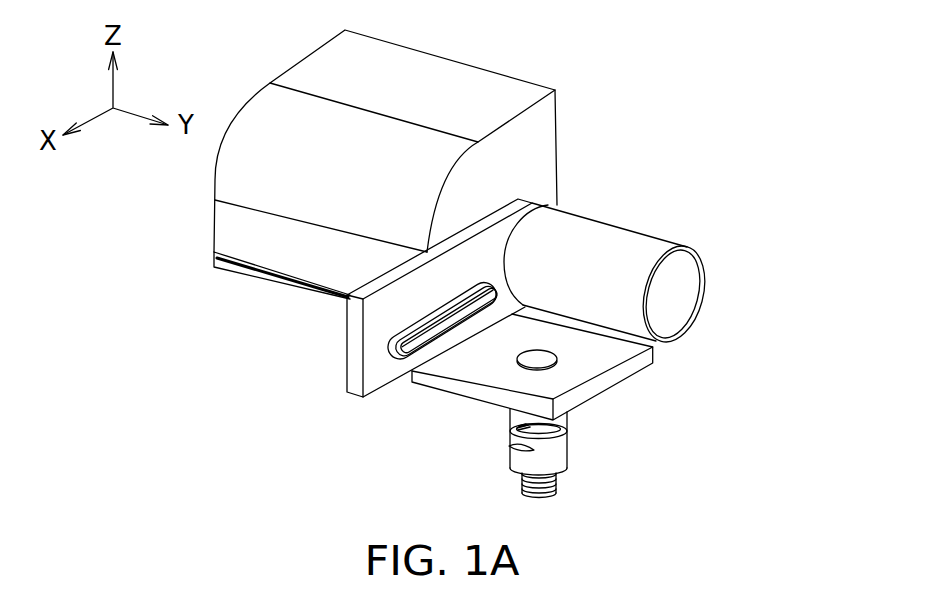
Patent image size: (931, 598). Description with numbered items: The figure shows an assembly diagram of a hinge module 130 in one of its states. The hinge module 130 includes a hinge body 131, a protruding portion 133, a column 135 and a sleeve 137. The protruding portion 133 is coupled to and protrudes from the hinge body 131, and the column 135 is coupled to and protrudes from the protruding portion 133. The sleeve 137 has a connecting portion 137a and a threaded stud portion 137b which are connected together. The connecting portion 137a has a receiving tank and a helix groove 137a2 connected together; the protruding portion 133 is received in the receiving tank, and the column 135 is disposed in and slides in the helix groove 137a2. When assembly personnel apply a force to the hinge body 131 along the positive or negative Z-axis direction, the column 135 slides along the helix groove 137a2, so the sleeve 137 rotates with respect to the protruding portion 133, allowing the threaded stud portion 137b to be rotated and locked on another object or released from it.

The hinge module 130 is at (857, 44).
The hinge body 131 is at (630, 218).
The protruding portion 133 is at (568, 434).
The column 135 is at (521, 427).
The sleeve 137 is at (678, 449).
The connecting portion 137a is at (562, 452).
The helix groove 137a2 is at (512, 452).
The threaded stud portion 137b is at (560, 483).